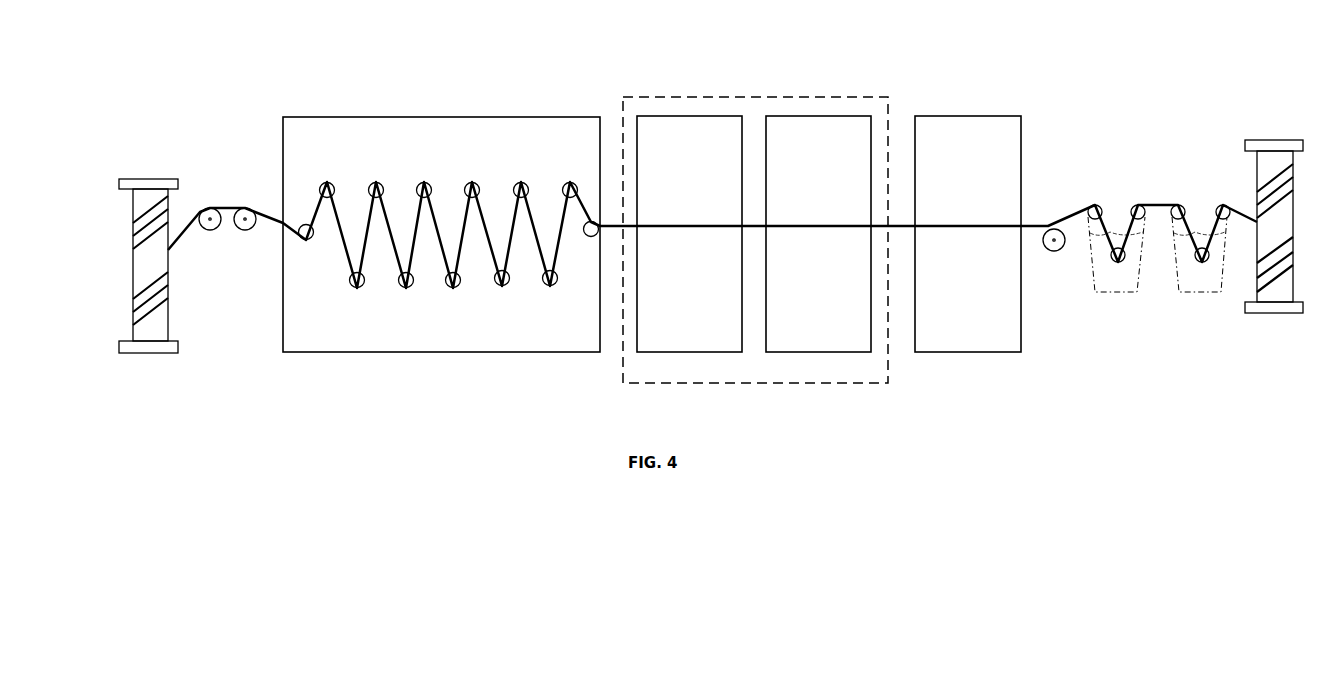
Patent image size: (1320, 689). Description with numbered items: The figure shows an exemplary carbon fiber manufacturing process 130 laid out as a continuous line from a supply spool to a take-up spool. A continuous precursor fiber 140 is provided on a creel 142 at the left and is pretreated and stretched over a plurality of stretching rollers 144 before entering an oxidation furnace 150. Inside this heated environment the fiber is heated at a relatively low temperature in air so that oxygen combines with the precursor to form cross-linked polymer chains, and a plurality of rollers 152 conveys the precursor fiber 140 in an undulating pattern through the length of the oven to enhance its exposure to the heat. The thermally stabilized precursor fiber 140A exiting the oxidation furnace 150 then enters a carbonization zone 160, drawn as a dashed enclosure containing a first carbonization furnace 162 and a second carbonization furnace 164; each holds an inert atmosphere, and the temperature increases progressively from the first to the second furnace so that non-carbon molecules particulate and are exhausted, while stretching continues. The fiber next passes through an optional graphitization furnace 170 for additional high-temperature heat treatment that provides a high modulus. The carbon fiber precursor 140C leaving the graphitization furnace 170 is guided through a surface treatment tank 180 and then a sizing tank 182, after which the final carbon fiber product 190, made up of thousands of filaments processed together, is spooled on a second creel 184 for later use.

The carbon fiber manufacturing process 130 is at (198, 110).
The precursor fiber 140 is at (173, 242).
The thermally stabilized precursor fiber 140A is at (607, 222).
The carbon fiber precursor 140C is at (1060, 217).
The creel 142 is at (143, 353).
The stretching rollers 144 is at (210, 230).
The oxidation furnace 150 is at (368, 117).
The rollers 152 is at (406, 288).
The carbonization zone 160 is at (744, 97).
The first carbonization furnace 162 is at (689, 234).
The second carbonization furnace 164 is at (818, 234).
The graphitization furnace 170 is at (983, 116).
The surface treatment tank 180 is at (1120, 292).
The sizing tank 182 is at (1198, 292).
The second creel 184 is at (1275, 313).
The carbon fiber product 190 is at (1241, 213).